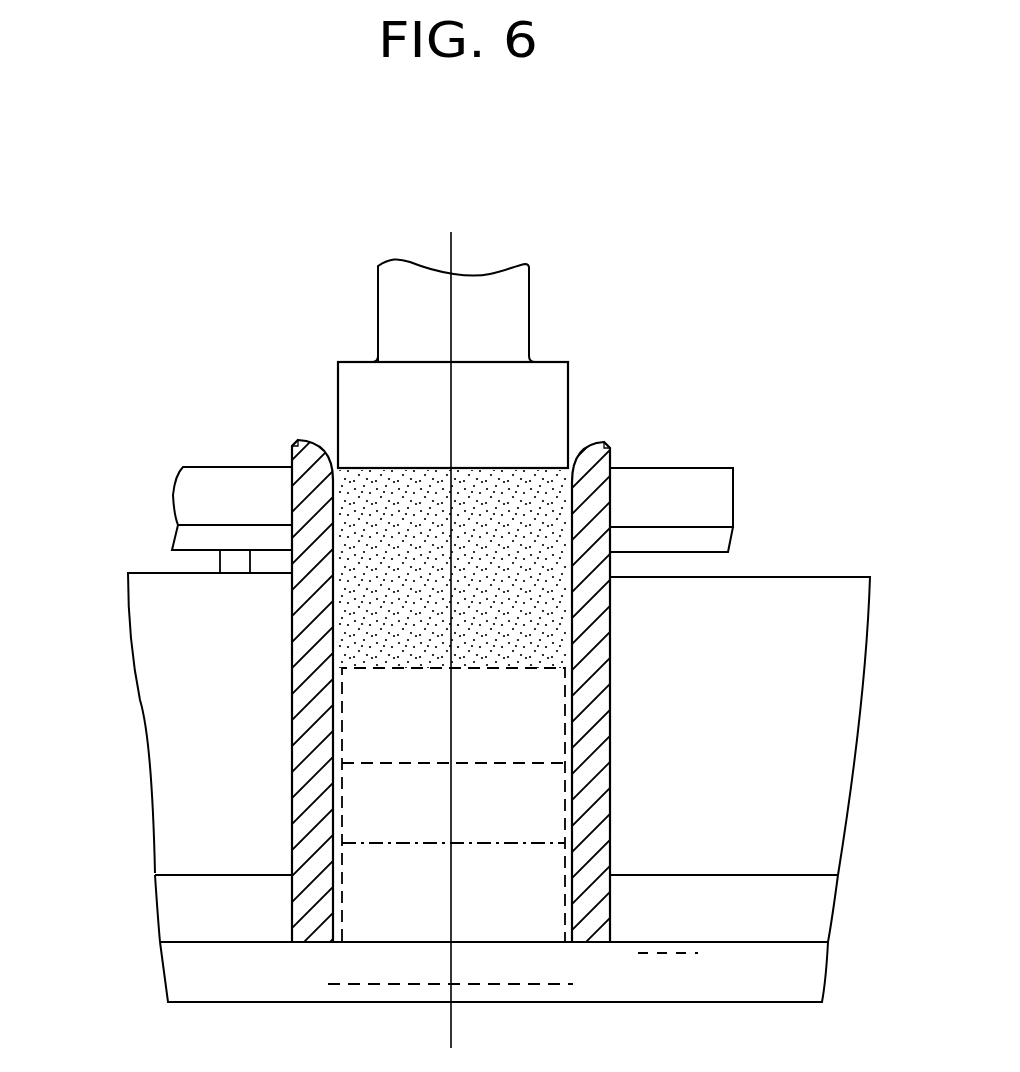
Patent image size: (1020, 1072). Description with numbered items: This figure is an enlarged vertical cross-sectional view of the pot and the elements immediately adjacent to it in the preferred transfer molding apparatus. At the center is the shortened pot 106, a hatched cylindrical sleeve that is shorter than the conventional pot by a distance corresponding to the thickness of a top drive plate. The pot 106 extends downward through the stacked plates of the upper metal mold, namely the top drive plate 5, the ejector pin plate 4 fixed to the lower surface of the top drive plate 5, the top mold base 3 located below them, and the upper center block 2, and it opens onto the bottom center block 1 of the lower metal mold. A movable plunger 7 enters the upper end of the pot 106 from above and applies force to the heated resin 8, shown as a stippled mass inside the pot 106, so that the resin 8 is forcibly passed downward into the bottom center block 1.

The bottom center block 1 is at (820, 982).
The upper center block 2 is at (826, 903).
The top mold base 3 is at (832, 808).
The ejector pin plate 4 is at (726, 541).
The top drive plate 5 is at (733, 488).
The movable plunger 7 is at (338, 381).
The heated resin 8 is at (365, 794).
The shortened pot 106 is at (292, 696).